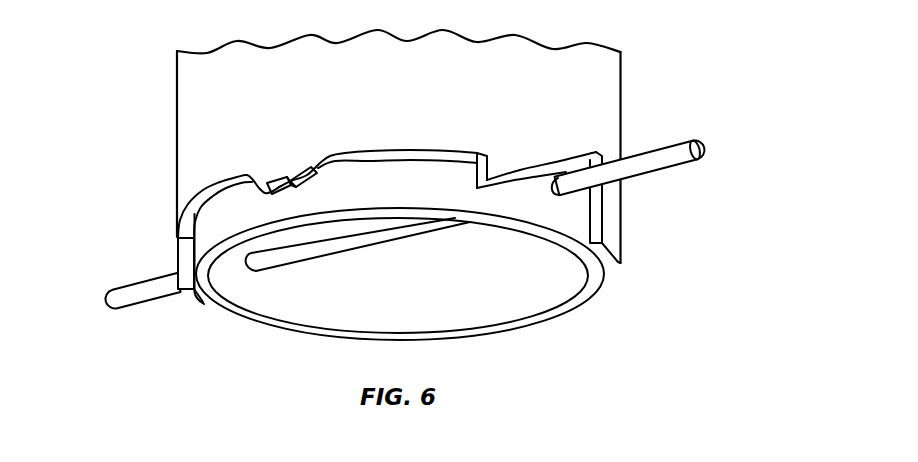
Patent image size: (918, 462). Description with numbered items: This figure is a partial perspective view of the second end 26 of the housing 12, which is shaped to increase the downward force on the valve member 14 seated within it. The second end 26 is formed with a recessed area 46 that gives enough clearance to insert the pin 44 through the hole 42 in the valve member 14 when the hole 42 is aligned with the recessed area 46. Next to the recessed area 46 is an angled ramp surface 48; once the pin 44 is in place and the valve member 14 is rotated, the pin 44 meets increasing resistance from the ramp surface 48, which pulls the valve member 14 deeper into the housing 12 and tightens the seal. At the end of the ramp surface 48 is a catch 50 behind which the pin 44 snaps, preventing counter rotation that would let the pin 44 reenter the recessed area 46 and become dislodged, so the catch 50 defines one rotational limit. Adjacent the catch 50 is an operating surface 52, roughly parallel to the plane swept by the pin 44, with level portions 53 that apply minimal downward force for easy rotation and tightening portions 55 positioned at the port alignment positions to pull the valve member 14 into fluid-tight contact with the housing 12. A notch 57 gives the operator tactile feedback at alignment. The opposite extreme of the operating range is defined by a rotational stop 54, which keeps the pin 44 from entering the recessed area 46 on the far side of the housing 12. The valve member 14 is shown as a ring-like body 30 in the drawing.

The housing 12 is at (250, 86).
The second end 26 is at (177, 140).
The valve member 14 is at (237, 287).
The ring 30 is at (510, 307).
The level portions 53 is at (202, 186).
The operating surface 52 is at (362, 154).
The tightening portions 55 is at (260, 178).
The notch 57 is at (281, 178).
The catch 50 is at (477, 178).
The angled ramp surface 48 is at (530, 166).
The recessed area 46 is at (597, 215).
The pin 44 is at (703, 149).
The hole 42 is at (558, 190).
The rotational stop 54 is at (185, 263).